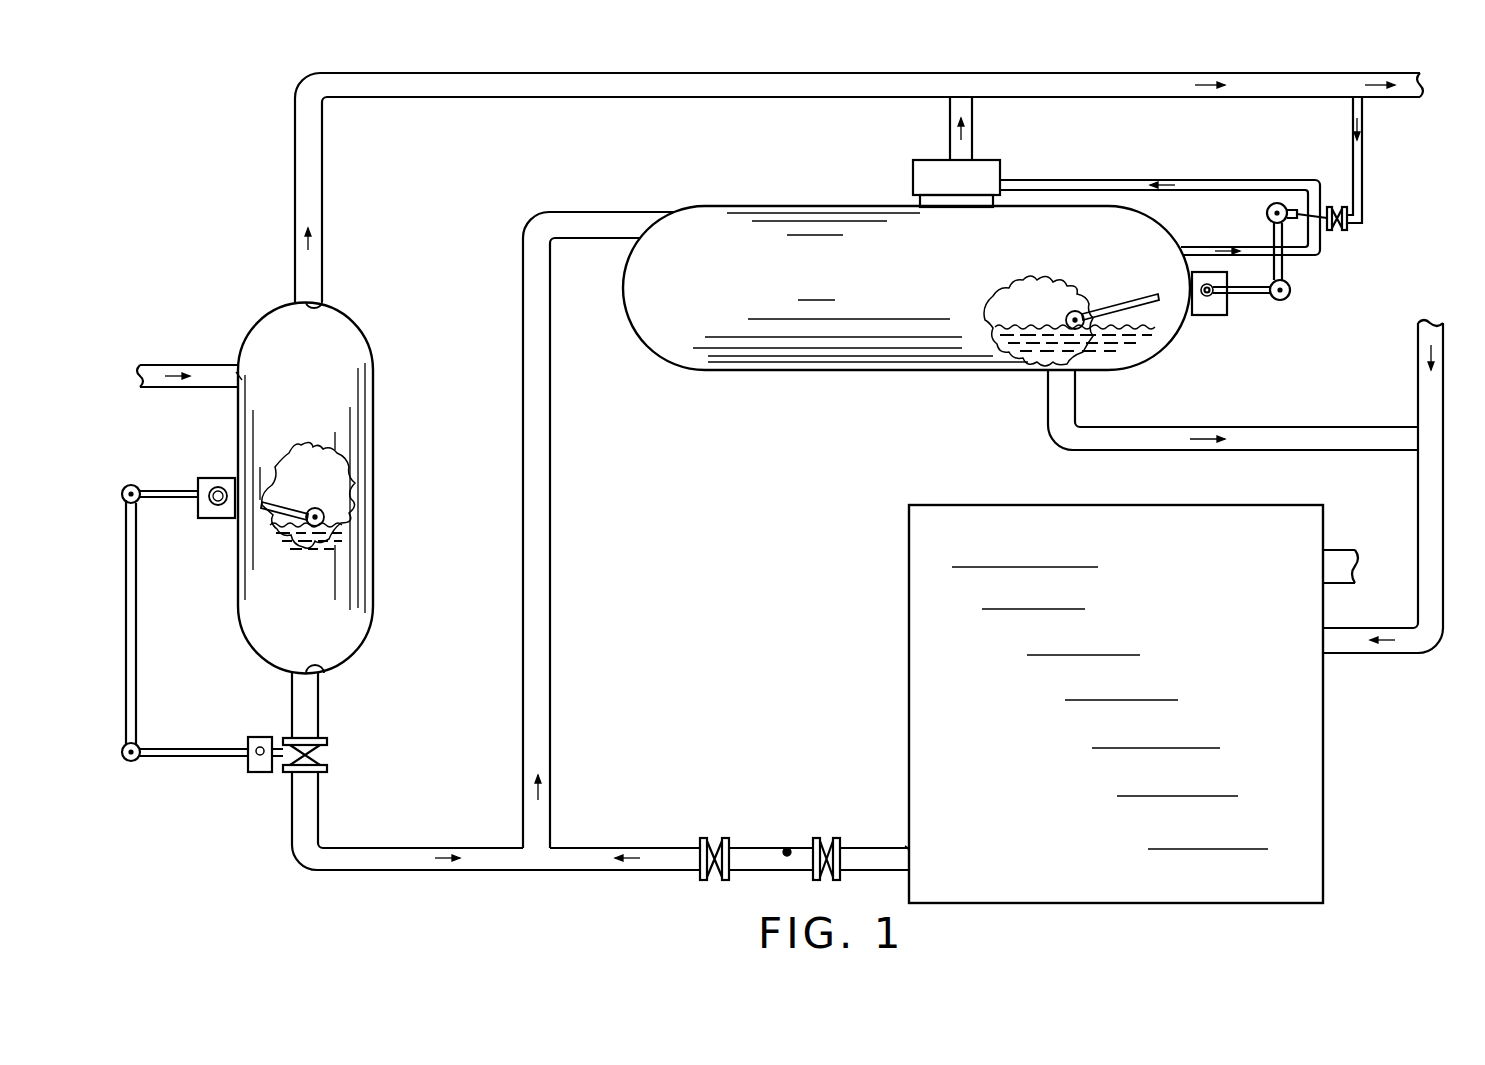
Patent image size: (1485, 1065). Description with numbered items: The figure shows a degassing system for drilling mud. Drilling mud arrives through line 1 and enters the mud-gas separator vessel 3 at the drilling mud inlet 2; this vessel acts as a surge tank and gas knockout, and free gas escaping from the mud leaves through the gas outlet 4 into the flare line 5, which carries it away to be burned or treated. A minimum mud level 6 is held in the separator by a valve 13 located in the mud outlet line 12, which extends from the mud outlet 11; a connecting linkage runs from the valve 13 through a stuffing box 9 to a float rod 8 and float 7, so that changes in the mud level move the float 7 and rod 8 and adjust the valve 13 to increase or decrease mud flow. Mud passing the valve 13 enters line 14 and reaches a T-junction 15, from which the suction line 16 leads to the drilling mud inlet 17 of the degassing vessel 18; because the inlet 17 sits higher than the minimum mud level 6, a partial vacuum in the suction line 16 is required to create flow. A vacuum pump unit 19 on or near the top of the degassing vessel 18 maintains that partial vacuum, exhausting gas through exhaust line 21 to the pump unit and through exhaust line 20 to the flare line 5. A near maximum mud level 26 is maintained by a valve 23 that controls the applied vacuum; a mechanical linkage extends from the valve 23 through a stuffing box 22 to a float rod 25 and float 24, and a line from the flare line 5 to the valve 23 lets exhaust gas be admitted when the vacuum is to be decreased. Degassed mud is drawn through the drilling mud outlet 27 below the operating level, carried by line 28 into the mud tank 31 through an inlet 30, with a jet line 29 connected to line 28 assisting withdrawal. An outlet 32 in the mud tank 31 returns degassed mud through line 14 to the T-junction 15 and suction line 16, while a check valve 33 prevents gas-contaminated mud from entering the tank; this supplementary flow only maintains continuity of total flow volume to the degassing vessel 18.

The line 1 is at (171, 365).
The drilling mud inlet 2 is at (238, 378).
The mud-gas separator vessel 3 is at (276, 322).
The gas outlet 4 is at (320, 312).
The flare line 5 is at (324, 180).
The minimum mud level 6 is at (308, 495).
The float 7 is at (314, 510).
The float rod 8 is at (284, 499).
The stuffing box 9 is at (222, 478).
The mud outlet 11 is at (335, 664).
The mud outlet line 12 is at (292, 702).
The valve 13 is at (326, 748).
The line 14 is at (380, 848).
The T-junction 15 is at (554, 846).
The suction line 16 is at (553, 598).
The drilling mud inlet 17 is at (654, 224).
The degassing vessel 18 is at (789, 212).
The vacuum pump unit 19 is at (913, 174).
The exhaust line 20 is at (973, 123).
The exhaust line 21 is at (1208, 247).
The stuffing box 22 is at (1209, 316).
The valve 23 is at (1326, 237).
The float 24 is at (1073, 312).
The float rod 25 is at (1122, 310).
The near maximum mud level 26 is at (1018, 322).
The drilling mud outlet 27 is at (1076, 370).
The line 28 is at (1203, 427).
The jet line 29 is at (1418, 344).
The inlet 30 is at (1360, 608).
The mud tank 31 is at (918, 605).
The outlet 32 is at (904, 850).
The check valve 33 is at (757, 868).